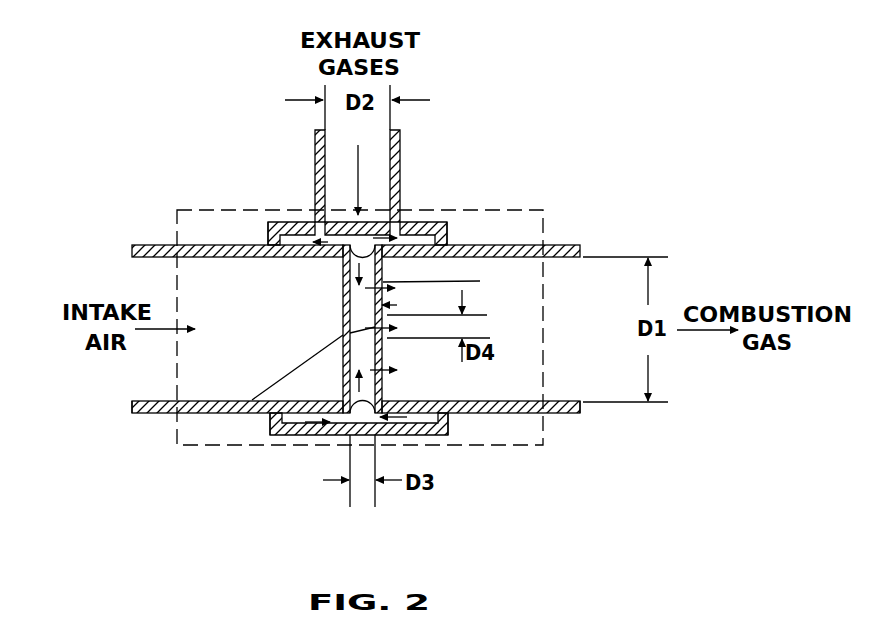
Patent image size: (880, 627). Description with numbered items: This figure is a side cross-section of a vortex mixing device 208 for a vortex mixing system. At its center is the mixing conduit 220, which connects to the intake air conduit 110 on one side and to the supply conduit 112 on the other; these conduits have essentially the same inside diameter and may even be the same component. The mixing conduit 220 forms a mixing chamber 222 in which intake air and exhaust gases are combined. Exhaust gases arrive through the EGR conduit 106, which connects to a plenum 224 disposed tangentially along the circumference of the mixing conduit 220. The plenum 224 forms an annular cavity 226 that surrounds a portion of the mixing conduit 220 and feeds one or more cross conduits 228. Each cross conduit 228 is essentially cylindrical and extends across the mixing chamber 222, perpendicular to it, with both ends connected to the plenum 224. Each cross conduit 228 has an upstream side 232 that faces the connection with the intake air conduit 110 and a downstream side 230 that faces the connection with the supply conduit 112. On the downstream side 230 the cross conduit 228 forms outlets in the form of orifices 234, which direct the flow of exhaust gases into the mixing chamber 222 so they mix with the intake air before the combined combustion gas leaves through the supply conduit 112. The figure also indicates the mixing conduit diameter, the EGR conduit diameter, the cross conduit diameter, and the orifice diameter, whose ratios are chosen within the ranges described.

The EGR conduit 106 is at (400, 163).
The intake air conduit 110 is at (173, 413).
The supply conduit 112 is at (570, 413).
The vortex mixing device 208 is at (512, 210).
The mixing conduit 220 is at (517, 245).
The mixing chamber 222 is at (240, 282).
The plenum 224 is at (407, 222).
The annular cavity 226 is at (275, 224).
The cross conduit 228 is at (232, 412).
The downstream side 230 is at (384, 305).
The upstream side 232 is at (343, 311).
The orifices 234 is at (480, 281).